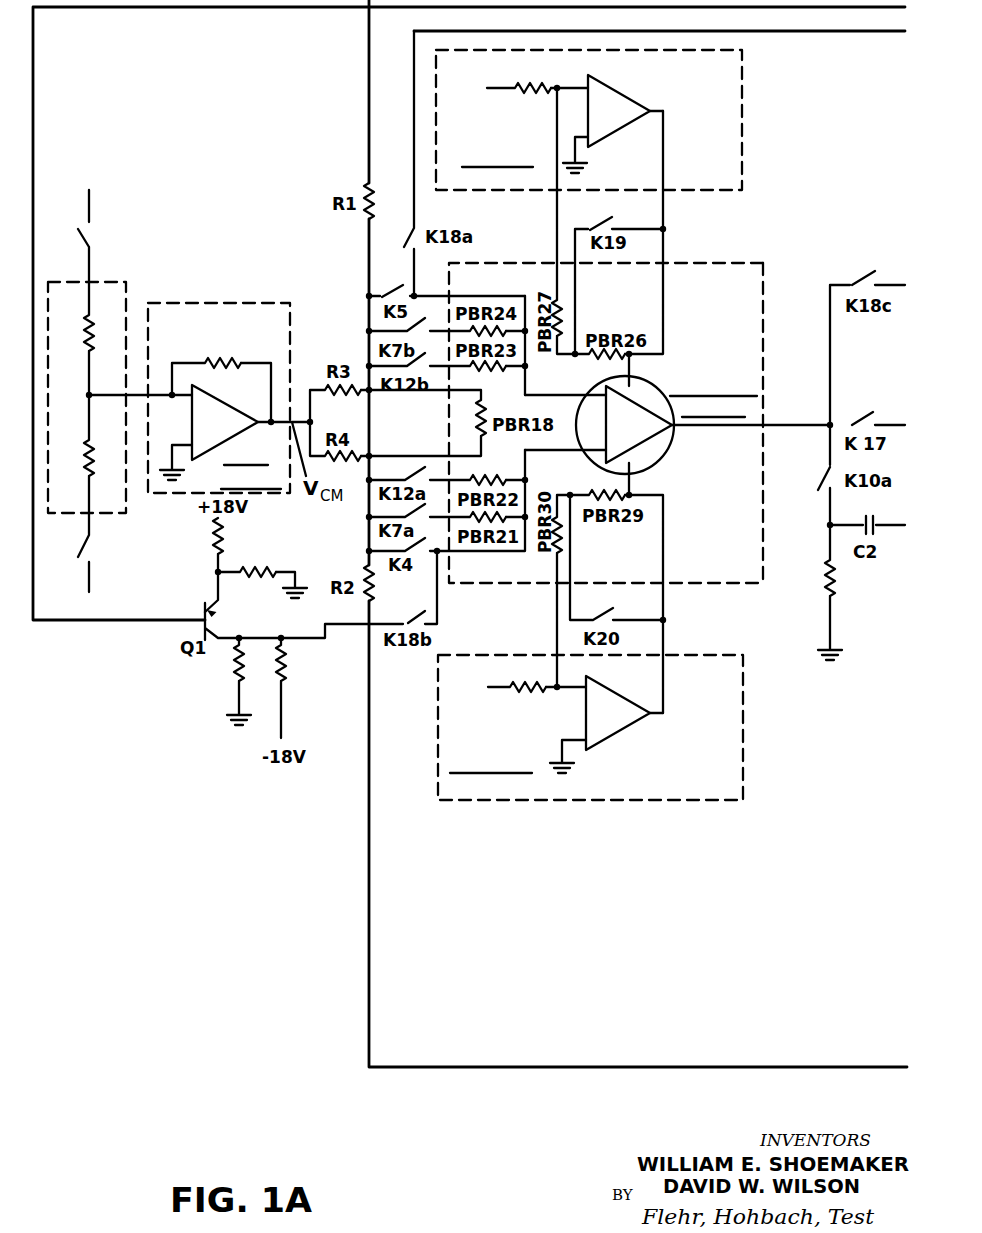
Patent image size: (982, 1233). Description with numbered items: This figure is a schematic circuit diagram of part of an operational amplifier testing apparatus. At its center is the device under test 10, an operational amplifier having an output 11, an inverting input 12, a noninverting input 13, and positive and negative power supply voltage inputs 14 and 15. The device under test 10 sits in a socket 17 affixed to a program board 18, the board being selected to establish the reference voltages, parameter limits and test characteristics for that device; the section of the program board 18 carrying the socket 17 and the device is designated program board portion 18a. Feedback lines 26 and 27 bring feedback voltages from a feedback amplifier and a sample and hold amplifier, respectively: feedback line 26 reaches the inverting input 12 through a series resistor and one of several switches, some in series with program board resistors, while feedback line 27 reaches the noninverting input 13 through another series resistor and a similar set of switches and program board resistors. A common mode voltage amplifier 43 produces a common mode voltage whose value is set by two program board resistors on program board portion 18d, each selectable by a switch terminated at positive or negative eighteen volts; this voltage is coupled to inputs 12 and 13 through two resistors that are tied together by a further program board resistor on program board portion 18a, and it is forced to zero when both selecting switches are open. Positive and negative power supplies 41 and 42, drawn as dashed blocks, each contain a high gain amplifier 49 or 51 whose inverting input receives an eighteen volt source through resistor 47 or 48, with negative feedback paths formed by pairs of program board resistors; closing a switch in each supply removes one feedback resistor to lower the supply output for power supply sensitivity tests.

The device under test 10 is at (666, 433).
The output 11 is at (777, 427).
The inverting input 12 is at (563, 394).
The noninverting input 13 is at (573, 450).
The positive power supply voltage input 14 is at (628, 366).
The negative power supply voltage input 15 is at (630, 486).
The socket 17 is at (667, 393).
The program board 18 is at (750, 304).
The program board portion 18a is at (763, 342).
The program board portion 18d is at (126, 296).
The feedback line 26 is at (369, 70).
The feedback line 27 is at (369, 893).
The power supply 41 is at (611, 120).
The power supply 42 is at (612, 727).
The common mode voltage amplifier 43 is at (230, 303).
The resistor 47 is at (532, 81).
The resistor 48 is at (535, 684).
The high gain amplifier 49 is at (628, 130).
The high gain amplifier 51 is at (616, 735).